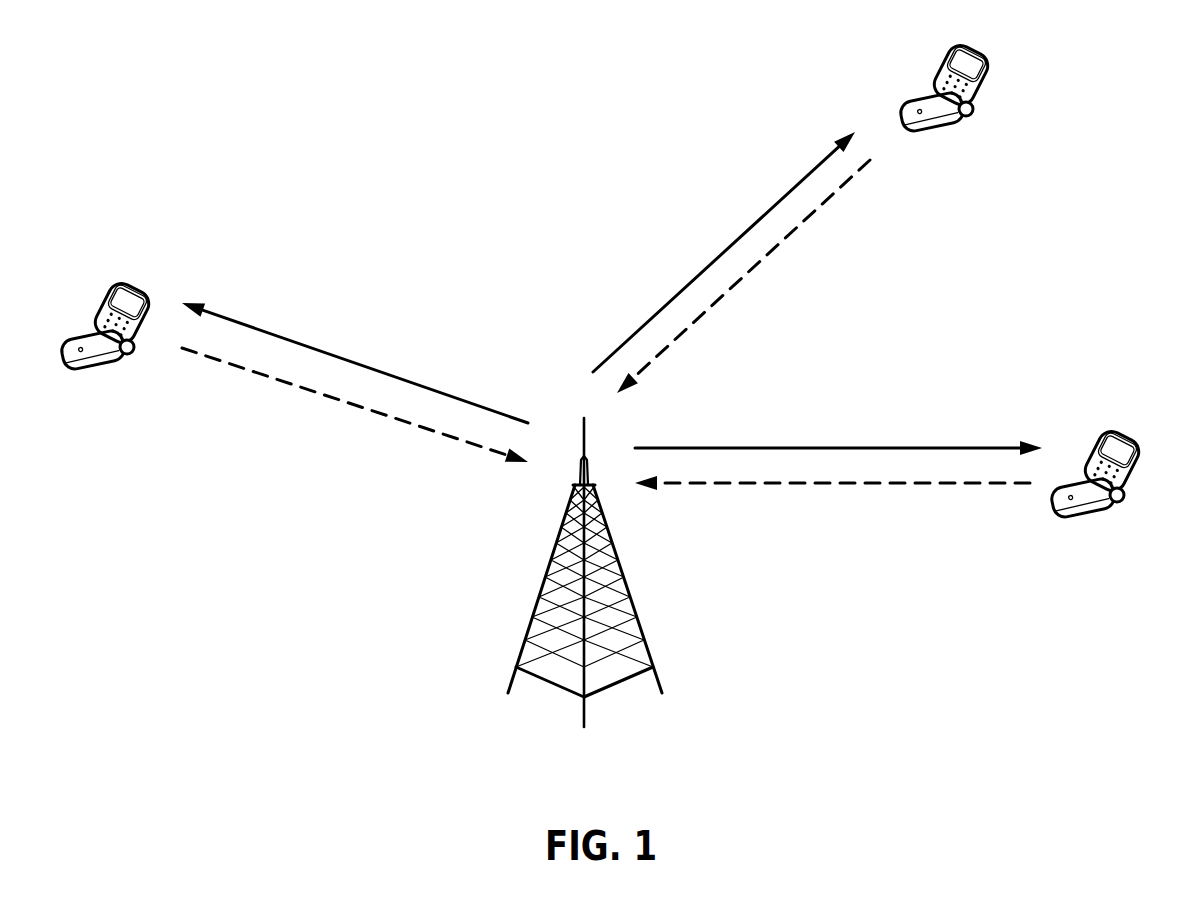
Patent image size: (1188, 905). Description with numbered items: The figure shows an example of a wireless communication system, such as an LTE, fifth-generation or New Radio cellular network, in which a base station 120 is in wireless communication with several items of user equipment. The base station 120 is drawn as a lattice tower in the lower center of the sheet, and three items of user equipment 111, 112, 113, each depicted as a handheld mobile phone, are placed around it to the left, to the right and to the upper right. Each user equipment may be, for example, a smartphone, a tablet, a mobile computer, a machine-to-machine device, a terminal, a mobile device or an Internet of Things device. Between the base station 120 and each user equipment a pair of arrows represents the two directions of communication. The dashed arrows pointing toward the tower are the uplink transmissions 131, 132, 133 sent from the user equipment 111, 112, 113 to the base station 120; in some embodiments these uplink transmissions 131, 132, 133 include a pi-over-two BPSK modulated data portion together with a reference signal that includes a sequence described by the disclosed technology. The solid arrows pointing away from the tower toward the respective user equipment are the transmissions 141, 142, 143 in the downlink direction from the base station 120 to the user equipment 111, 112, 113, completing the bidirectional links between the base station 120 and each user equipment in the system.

The user equipment 111 is at (118, 365).
The user equipment 112 is at (1108, 510).
The user equipment 113 is at (958, 123).
The base station 120 is at (648, 650).
The uplink transmission 131 is at (393, 418).
The uplink transmission 132 is at (798, 485).
The uplink transmission 133 is at (770, 250).
The downlink transmission 141 is at (290, 340).
The downlink transmission 142 is at (948, 447).
The downlink transmission 143 is at (773, 202).